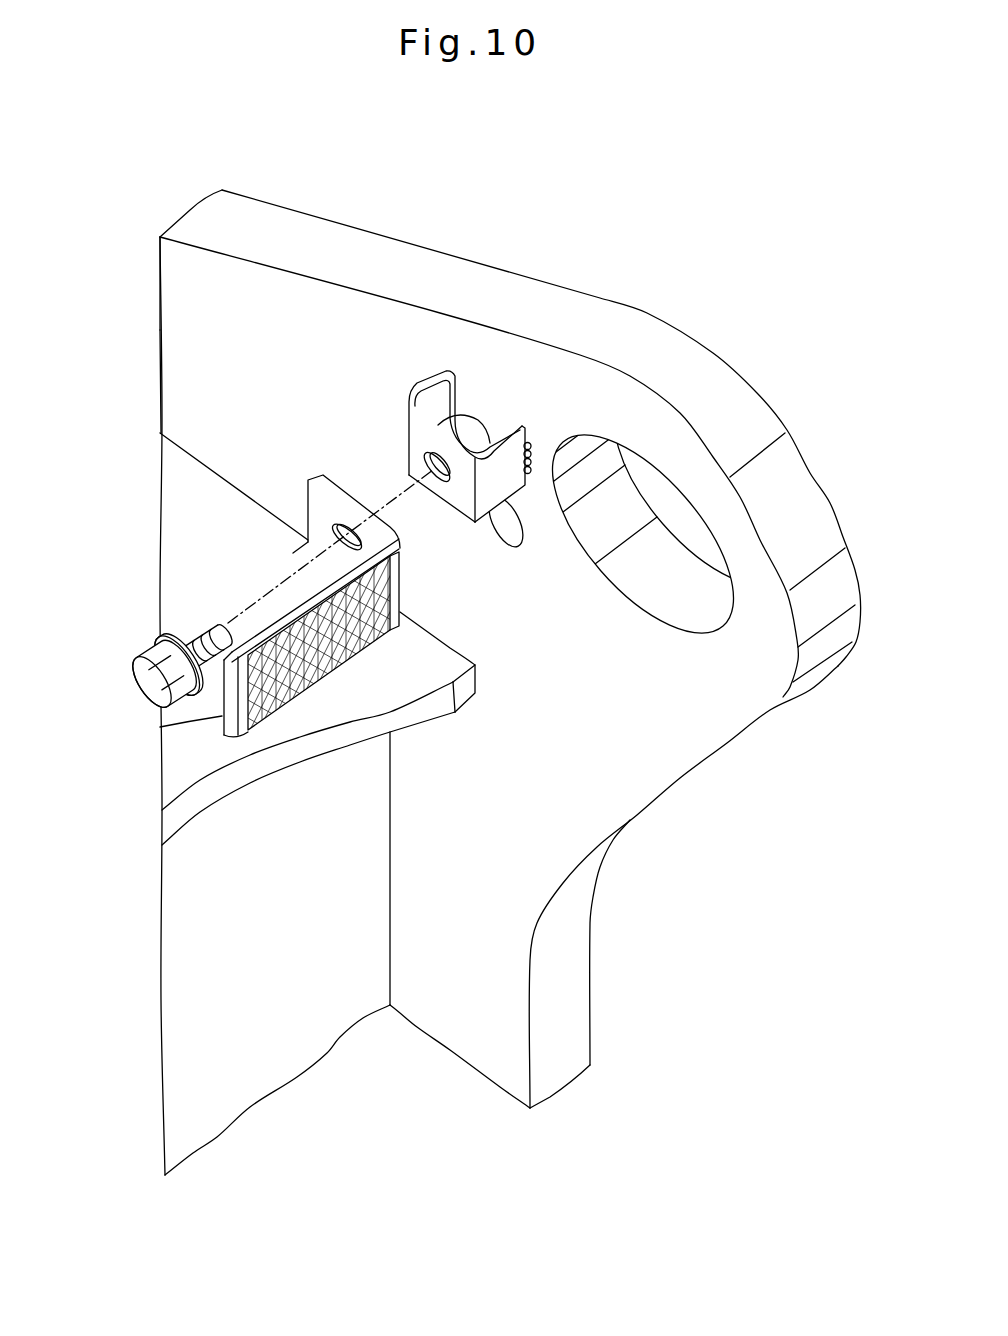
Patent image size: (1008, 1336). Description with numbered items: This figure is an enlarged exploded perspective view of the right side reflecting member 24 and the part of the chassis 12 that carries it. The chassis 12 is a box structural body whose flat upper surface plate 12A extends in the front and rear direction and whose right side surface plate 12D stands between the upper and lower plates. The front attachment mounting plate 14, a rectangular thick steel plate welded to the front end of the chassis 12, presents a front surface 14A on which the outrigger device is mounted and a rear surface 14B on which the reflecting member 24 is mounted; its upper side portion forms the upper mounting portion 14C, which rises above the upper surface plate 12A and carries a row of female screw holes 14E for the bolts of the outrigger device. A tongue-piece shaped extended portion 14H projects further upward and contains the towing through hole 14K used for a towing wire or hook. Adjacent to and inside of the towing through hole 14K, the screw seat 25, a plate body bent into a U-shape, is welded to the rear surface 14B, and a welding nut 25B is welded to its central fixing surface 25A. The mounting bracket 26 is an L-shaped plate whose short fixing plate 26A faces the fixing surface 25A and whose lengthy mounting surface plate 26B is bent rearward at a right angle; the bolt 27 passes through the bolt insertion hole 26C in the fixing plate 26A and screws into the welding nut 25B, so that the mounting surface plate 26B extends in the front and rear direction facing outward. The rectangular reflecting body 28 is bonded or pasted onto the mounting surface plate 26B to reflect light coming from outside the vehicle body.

The chassis 12 is at (333, 1052).
The upper surface plate 12A is at (192, 510).
The right side surface plate 12D is at (250, 1068).
The front attachment mounting plate 14 is at (317, 242).
The front surface 14A is at (590, 978).
The rear surface 14B is at (218, 380).
The upper mounting portion 14C is at (185, 312).
The female screw hole 14E is at (508, 523).
The extended portion 14H is at (697, 712).
The towing through hole 14K is at (663, 572).
The reflecting member 24 is at (375, 388).
The screw seat 25 is at (471, 383).
The fixing surface 25A is at (441, 493).
The welding nut 25B is at (470, 428).
The mounting bracket 26 is at (224, 576).
The fixing plate 26A is at (317, 515).
The mounting surface plate 26B is at (223, 716).
The bolt insertion hole 26C is at (338, 527).
The bolt 27 is at (146, 690).
The reflecting body 28 is at (318, 670).